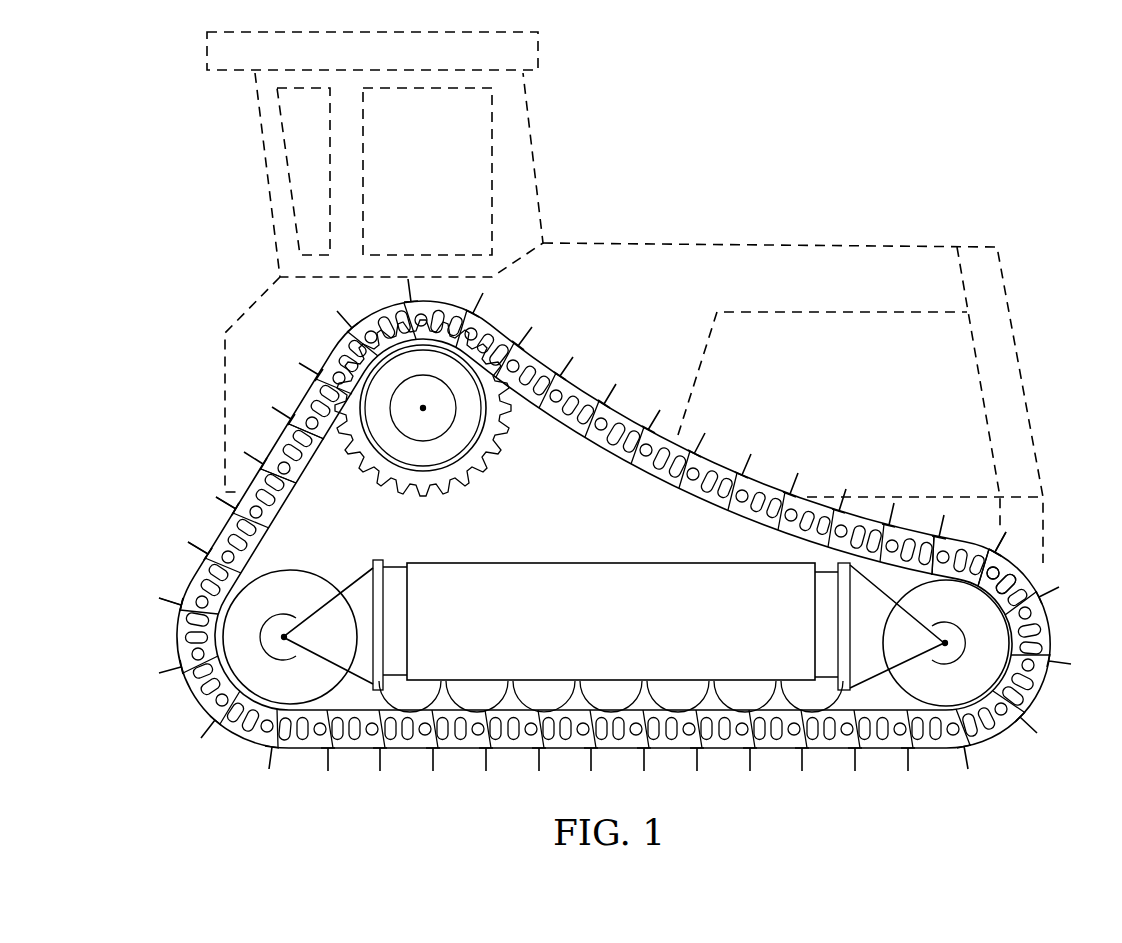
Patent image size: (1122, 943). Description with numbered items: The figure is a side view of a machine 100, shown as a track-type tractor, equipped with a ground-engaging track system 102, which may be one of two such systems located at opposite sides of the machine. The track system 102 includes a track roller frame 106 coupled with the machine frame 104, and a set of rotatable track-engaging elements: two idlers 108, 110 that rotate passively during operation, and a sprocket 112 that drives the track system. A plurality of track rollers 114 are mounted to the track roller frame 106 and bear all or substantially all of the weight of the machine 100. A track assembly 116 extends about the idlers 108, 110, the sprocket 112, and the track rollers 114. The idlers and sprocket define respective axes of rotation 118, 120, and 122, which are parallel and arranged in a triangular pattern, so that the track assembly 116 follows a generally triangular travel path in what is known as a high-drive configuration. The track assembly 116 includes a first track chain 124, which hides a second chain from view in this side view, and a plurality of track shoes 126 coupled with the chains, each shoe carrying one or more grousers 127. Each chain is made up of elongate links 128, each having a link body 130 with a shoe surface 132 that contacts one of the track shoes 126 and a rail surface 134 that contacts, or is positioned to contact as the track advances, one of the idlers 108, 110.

The machine 100 is at (177, 254).
The ground-engaging track system 102 is at (191, 702).
The machine frame 104 is at (225, 423).
The track roller frame 106 is at (600, 565).
The rotatable track-engaging element 108 is at (292, 567).
The rotatable track-engaging element 110 is at (880, 688).
The sprocket 112 is at (455, 482).
The track rollers 114 is at (430, 680).
The track assembly 116 is at (183, 598).
The axis of rotation 118 is at (286, 637).
The axis of rotation 120 is at (944, 643).
The axis of rotation 122 is at (420, 409).
The first track chain 124 is at (300, 477).
The track shoes 126 is at (217, 527).
The grousers 127 is at (218, 495).
The elongate links 128 is at (1008, 542).
The link body 130 is at (1013, 563).
The shoe surface 132 is at (983, 537).
The rail surface 134 is at (963, 585).